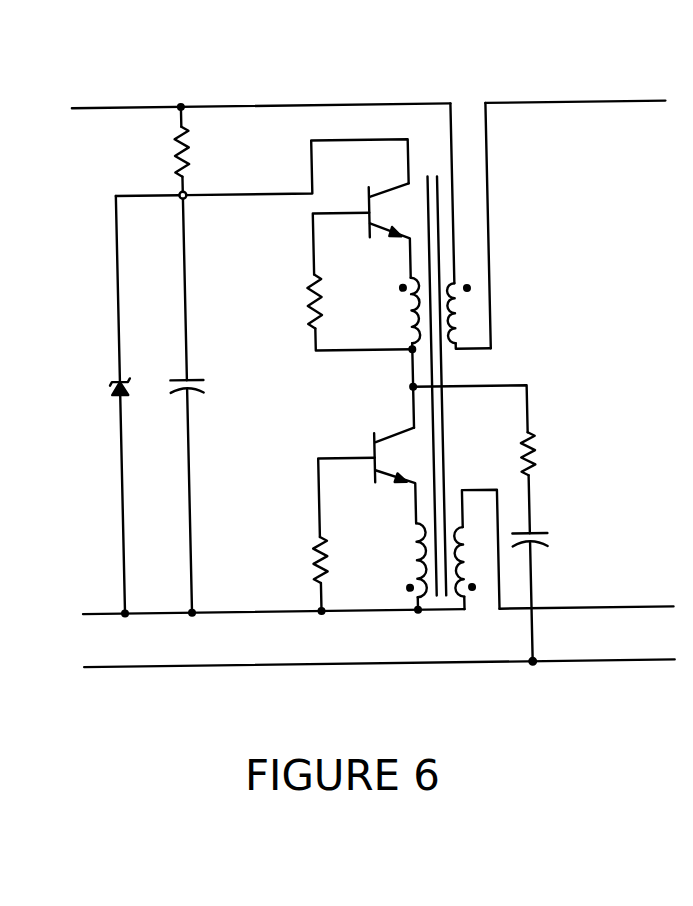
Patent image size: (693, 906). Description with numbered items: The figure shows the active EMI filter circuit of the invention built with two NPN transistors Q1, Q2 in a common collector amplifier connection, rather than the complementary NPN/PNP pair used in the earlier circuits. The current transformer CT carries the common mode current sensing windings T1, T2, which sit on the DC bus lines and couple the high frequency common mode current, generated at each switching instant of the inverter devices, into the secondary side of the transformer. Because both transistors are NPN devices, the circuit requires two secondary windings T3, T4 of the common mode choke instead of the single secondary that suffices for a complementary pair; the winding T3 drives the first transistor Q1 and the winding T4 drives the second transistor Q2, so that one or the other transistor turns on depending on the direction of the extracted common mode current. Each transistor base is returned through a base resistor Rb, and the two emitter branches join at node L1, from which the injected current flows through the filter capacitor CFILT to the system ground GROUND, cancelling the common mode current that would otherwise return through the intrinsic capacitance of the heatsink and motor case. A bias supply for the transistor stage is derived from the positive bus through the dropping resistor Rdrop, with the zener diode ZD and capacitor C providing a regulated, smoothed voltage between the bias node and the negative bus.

The ground GROUND is at (379, 681).
The current transformer CT is at (540, 205).
The dropping resistor Rdrop is at (223, 150).
The zener diode ZD is at (97, 405).
The capacitor C is at (204, 405).
The NPN bipolar transistor Q1 is at (396, 230).
The bipolar transistor Q2 is at (400, 476).
The base resistor Rb is at (362, 413).
The common mode current sensing winding T1 is at (472, 316).
The common mode current sensing winding T2 is at (476, 550).
The secondary winding T3 is at (400, 316).
The secondary winding T4 is at (406, 568).
The output node L1 is at (450, 391).
The filter capacitor CFILT is at (565, 598).